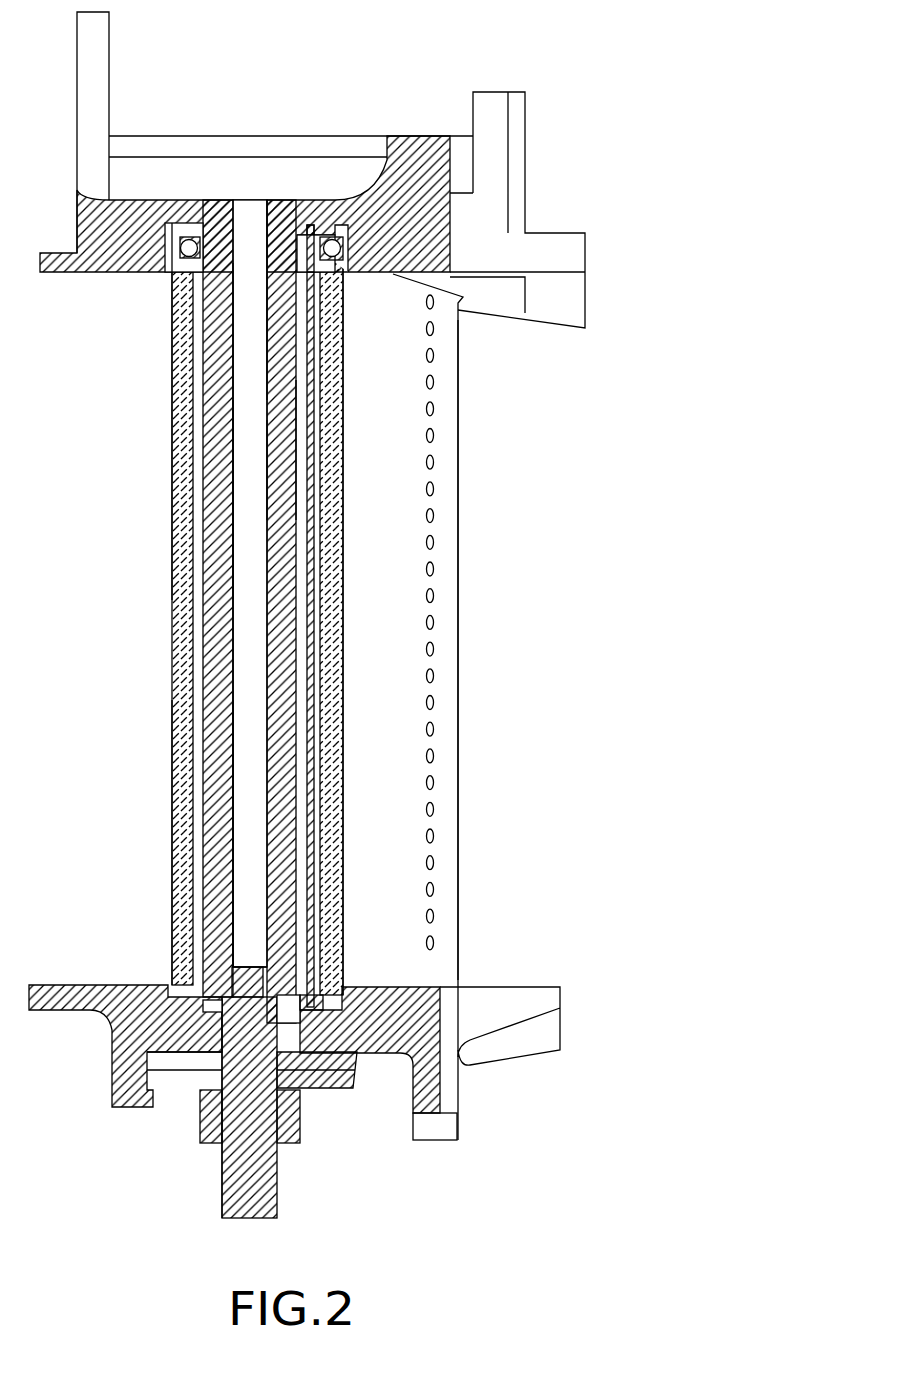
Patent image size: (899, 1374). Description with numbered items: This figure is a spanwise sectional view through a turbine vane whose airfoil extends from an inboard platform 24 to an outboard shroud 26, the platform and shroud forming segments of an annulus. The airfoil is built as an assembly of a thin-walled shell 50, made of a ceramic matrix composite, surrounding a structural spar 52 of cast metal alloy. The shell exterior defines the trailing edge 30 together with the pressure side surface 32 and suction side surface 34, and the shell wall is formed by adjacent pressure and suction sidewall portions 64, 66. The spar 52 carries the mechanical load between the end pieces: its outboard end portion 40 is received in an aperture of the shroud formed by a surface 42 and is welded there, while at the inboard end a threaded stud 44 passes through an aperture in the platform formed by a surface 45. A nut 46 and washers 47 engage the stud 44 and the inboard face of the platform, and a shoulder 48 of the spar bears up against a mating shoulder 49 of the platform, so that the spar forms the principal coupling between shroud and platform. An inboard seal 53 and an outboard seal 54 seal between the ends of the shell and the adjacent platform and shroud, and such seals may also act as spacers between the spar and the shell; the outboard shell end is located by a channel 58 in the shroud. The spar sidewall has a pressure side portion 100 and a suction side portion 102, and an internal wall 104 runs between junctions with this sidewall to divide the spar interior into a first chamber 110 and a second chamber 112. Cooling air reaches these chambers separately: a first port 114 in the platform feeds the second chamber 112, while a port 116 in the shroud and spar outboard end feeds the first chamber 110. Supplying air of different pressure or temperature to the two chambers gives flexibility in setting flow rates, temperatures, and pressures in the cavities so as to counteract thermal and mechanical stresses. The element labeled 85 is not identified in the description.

The inboard platform 24 is at (426, 1047).
The outboard shroud 26 is at (411, 166).
The trailing edge 30 is at (461, 776).
The pressure side surface 32 is at (175, 845).
The suction side surface 34 is at (390, 686).
The outboard end portion 40 is at (297, 212).
The surface 42 is at (290, 205).
The threaded stud 44 is at (259, 1204).
The surface 45 is at (214, 1023).
The nut 46 is at (304, 1143).
The washers 47 is at (353, 1092).
The shoulder 48 is at (207, 1027).
The mating shoulder 49 is at (213, 1010).
The thin-walled shell 50 is at (170, 390).
The structural spar 52 is at (289, 402).
The inboard seal 53 is at (306, 1012).
The outboard seal 54 is at (186, 258).
The channel 58 is at (176, 246).
The pressure sidewall portion 64 is at (190, 720).
The suction sidewall portion 66 is at (334, 563).
The right upper seal 85 is at (344, 245).
The pressure side portion 100 is at (210, 592).
The suction side portion 102 is at (307, 511).
The internal wall 104 is at (280, 475).
The first chamber 110 is at (253, 612).
The second chamber 112 is at (323, 430).
The first port 114 is at (296, 998).
The port 116 is at (250, 194).